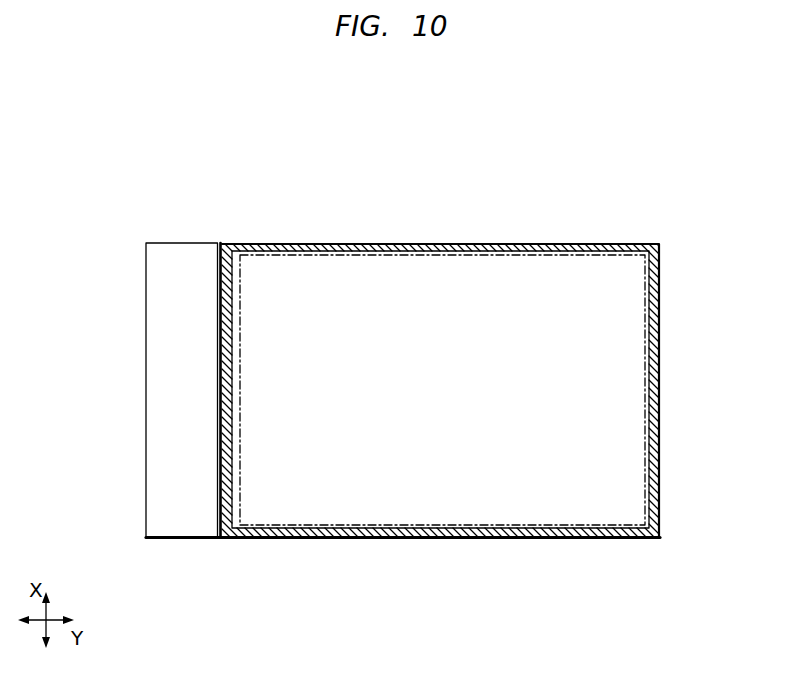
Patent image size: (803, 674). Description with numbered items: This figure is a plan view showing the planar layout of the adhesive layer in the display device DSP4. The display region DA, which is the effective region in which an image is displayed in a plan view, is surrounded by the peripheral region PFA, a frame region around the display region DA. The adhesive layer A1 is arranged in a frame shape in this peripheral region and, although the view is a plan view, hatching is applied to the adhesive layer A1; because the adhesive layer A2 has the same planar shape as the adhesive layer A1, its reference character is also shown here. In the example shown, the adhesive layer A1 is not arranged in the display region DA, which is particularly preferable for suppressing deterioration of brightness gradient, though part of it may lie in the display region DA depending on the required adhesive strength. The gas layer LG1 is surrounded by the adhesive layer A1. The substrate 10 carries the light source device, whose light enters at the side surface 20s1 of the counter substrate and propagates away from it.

The substrate (array substrate) 10 is at (172, 261).
The side surface of the substrate 20s1 is at (205, 376).
The display device DSP4 is at (367, 387).
The adhesive layer A1 is at (403, 358).
The adhesive layer A2 is at (580, 243).
The gas layer LG1 is at (608, 367).
The display region DA is at (646, 548).
The peripheral region (frame region) PFA is at (236, 548).